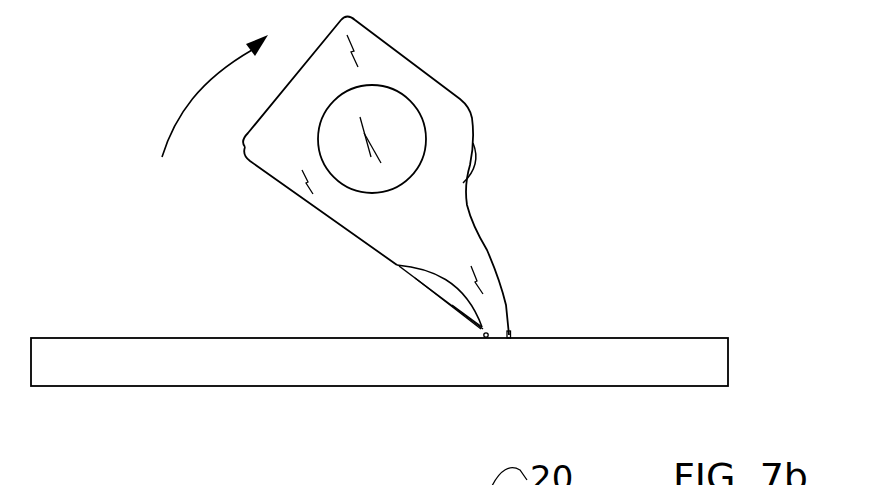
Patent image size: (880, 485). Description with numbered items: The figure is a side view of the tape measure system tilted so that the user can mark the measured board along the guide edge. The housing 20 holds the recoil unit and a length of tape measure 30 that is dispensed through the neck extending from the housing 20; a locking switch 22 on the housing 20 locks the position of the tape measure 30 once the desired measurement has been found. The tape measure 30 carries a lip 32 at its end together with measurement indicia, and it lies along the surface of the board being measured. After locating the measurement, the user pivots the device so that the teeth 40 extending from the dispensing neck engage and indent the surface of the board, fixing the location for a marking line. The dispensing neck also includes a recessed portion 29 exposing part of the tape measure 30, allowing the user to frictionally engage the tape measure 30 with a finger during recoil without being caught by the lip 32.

The housing 20 is at (452, 90).
The locking switch 22 is at (475, 157).
The recessed portion 29 is at (400, 268).
The tape measure 30 is at (452, 305).
The lip 32 is at (728, 338).
The teeth 40 is at (511, 334).